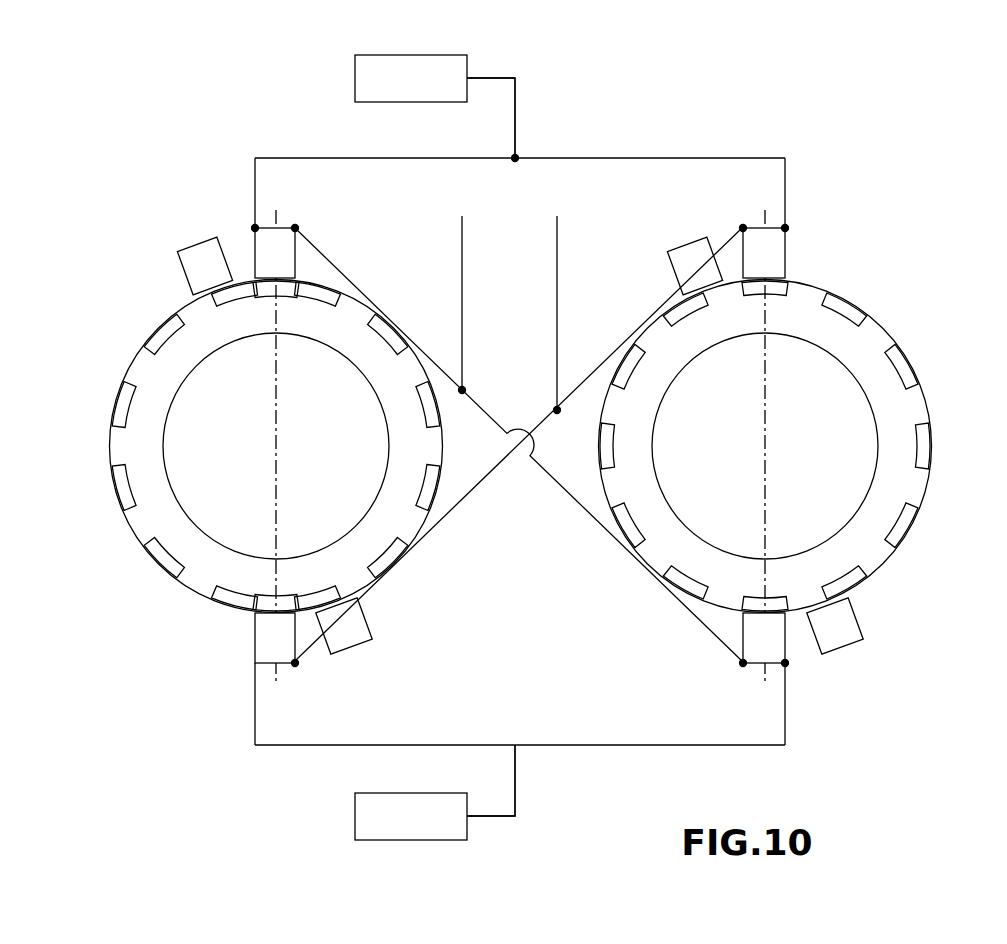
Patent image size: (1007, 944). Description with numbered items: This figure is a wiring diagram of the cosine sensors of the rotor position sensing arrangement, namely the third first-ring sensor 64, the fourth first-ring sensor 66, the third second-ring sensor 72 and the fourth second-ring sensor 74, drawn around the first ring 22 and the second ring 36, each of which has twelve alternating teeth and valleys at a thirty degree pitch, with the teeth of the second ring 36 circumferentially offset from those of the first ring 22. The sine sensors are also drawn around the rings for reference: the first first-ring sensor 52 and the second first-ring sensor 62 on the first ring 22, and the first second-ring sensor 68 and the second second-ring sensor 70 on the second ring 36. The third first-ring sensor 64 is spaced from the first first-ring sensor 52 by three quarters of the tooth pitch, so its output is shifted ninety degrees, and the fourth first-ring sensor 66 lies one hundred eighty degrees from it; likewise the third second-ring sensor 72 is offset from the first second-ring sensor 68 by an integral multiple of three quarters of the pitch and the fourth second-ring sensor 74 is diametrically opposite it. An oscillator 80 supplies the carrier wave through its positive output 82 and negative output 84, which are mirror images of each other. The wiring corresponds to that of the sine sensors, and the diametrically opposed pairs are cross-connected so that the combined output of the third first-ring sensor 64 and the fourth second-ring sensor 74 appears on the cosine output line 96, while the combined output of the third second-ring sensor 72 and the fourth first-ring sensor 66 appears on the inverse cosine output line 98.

The first ring 22 is at (157, 512).
The second ring 36 is at (915, 405).
The first first-ring sensor 52 is at (183, 268).
The second first-ring sensor 62 is at (372, 628).
The third first-ring sensor 64 is at (258, 252).
The fourth first-ring sensor 66 is at (258, 648).
The first second-ring sensor 68 is at (668, 262).
The second second-ring sensor 70 is at (863, 620).
The third second-ring sensor 72 is at (786, 250).
The fourth second-ring sensor 74 is at (785, 640).
The oscillator 80 is at (355, 78).
The positive output 82 is at (468, 73).
The negative output 84 is at (468, 820).
The cosine output line 96 is at (565, 492).
The inverse cosine output line 98 is at (446, 518).